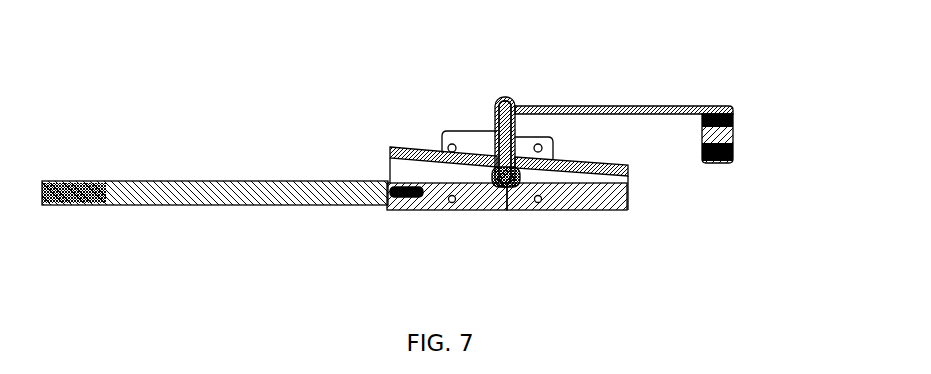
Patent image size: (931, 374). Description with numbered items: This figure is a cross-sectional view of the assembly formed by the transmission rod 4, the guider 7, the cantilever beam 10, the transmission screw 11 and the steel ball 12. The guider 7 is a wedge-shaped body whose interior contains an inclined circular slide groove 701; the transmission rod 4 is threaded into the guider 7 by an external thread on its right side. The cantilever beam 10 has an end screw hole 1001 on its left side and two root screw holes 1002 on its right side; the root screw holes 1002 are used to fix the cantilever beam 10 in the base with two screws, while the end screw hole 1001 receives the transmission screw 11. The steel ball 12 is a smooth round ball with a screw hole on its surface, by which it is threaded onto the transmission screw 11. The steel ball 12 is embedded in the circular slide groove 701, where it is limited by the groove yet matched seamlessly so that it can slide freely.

The transmission rod 4 is at (208, 205).
The guider 7 is at (442, 208).
The circular slide groove 701 is at (390, 147).
The cantilever beam 10 is at (670, 107).
The end screw hole 1001 is at (497, 120).
The root screw holes 1002 is at (733, 119).
The transmission screw 11 is at (512, 98).
The steel ball 12 is at (512, 190).